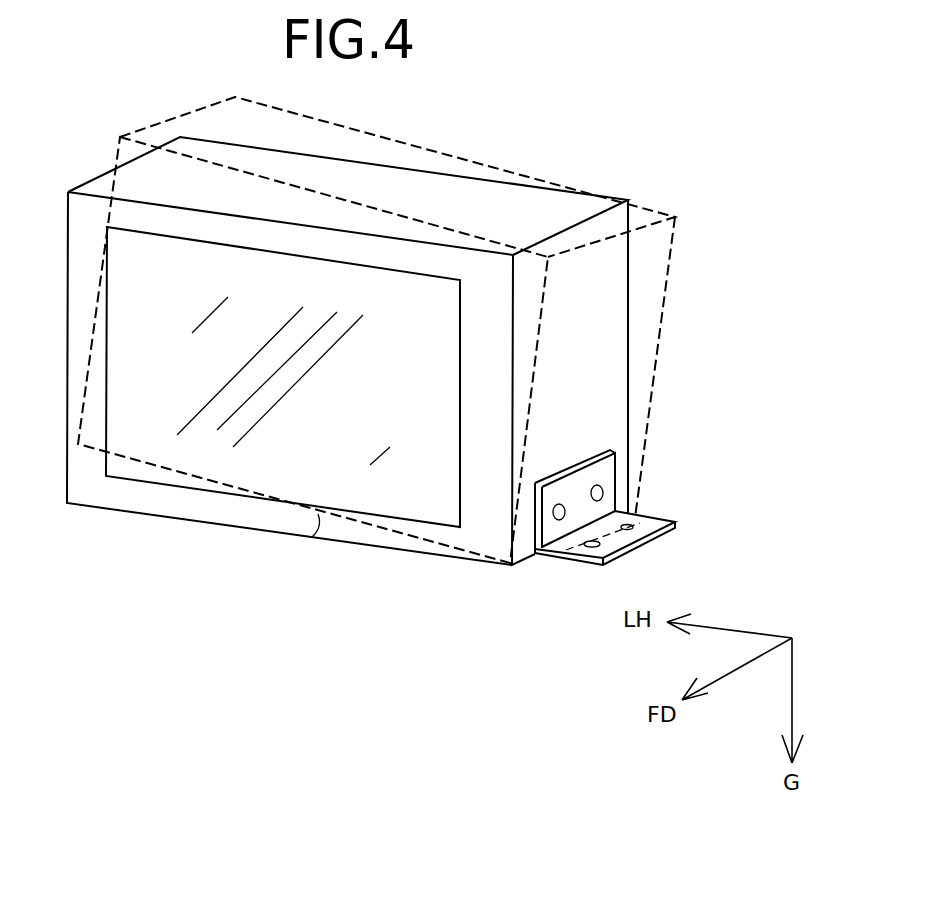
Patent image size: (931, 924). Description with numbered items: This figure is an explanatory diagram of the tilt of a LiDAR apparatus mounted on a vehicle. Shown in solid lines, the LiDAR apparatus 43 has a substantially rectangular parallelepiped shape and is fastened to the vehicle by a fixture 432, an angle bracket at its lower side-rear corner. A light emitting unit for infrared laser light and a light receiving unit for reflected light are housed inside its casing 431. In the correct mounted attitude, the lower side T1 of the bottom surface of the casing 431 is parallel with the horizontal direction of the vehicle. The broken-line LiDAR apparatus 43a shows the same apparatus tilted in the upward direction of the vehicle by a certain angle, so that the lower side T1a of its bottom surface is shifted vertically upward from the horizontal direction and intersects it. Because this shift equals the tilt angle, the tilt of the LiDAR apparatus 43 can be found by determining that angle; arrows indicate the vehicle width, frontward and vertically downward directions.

The LiDAR apparatus 43 is at (628, 355).
The LiDAR apparatus 43a is at (668, 277).
The casing 431 is at (597, 418).
The fixture 432 is at (617, 540).
The lower side T1 is at (123, 513).
The lower side T1a is at (170, 470).